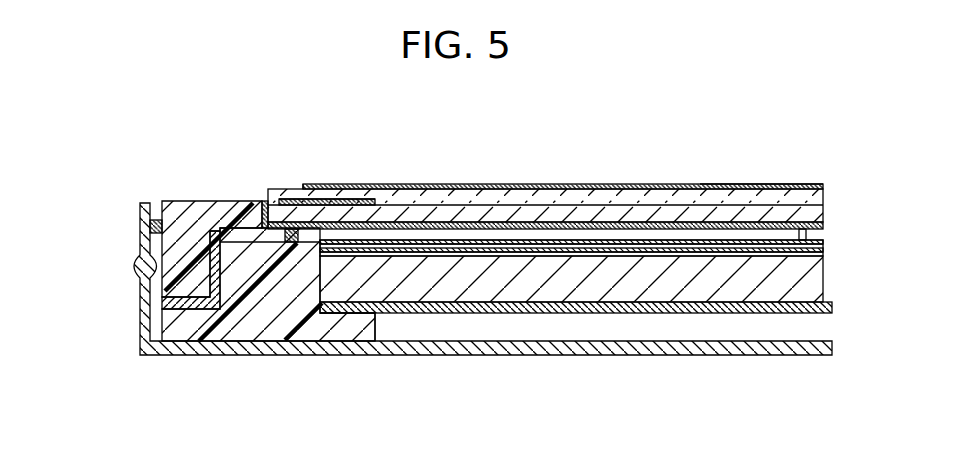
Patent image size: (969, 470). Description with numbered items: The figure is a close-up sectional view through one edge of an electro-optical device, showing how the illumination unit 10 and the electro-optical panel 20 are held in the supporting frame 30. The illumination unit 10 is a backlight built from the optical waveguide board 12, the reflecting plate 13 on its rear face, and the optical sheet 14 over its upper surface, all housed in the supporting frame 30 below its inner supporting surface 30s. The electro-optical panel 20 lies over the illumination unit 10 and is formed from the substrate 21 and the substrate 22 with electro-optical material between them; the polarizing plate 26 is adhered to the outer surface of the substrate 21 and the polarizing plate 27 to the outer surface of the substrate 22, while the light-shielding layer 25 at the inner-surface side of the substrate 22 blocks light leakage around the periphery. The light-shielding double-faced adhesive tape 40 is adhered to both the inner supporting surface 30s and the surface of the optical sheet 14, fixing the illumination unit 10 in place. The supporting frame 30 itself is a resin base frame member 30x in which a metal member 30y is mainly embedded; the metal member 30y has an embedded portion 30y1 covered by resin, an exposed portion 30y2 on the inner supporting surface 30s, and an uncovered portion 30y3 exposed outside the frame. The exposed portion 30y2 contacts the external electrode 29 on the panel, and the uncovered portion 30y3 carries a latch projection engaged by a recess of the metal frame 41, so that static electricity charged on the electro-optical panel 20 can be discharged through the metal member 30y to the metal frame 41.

The illumination unit 10 is at (607, 318).
The optical waveguide board 12 is at (826, 287).
The reflecting plate 13 is at (830, 317).
The optical sheet 14 is at (826, 247).
The electro-optical panel 20 is at (581, 171).
The substrate 21 is at (823, 207).
The substrate 22 is at (599, 160).
The light-shielding layer 25 is at (368, 198).
The polarizing plate 26 is at (823, 226).
The polarizing plate 27 is at (779, 184).
The external electrode 29 is at (262, 215).
The supporting frame 30 is at (212, 290).
The inner supporting surface 30s is at (303, 198).
The resin base frame member 30x is at (370, 330).
The metal member 30y is at (236, 233).
The embedded portion 30y1 is at (188, 306).
The exposed portion 30y2 is at (275, 238).
The uncovered portion 30y3 is at (150, 230).
The light-shielding double-faced adhesive tape 40 is at (333, 198).
The metal frame 41 is at (146, 319).